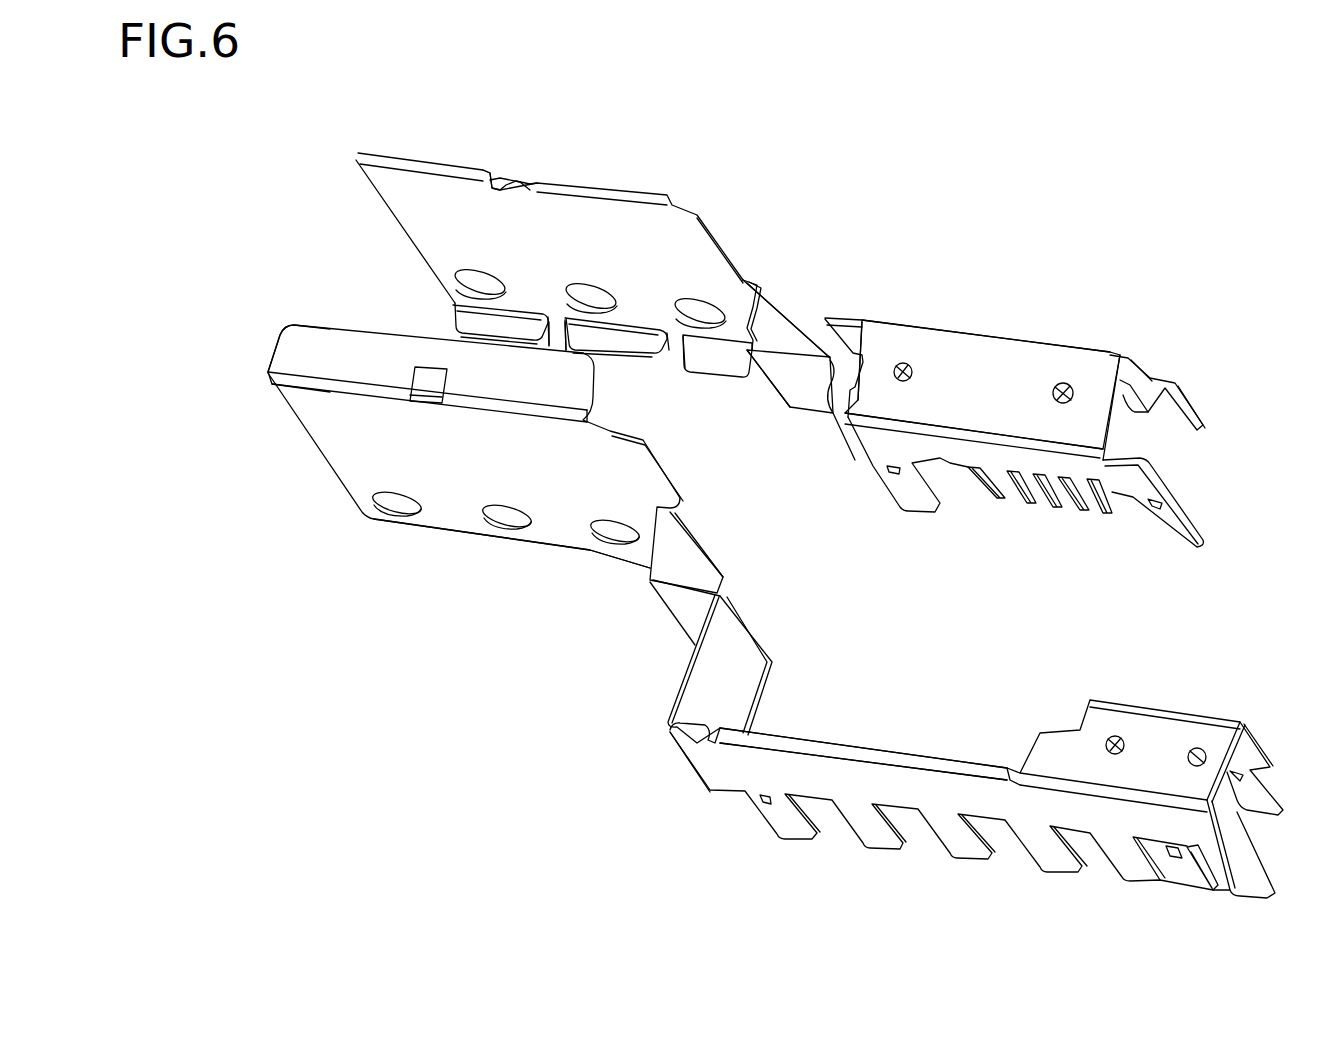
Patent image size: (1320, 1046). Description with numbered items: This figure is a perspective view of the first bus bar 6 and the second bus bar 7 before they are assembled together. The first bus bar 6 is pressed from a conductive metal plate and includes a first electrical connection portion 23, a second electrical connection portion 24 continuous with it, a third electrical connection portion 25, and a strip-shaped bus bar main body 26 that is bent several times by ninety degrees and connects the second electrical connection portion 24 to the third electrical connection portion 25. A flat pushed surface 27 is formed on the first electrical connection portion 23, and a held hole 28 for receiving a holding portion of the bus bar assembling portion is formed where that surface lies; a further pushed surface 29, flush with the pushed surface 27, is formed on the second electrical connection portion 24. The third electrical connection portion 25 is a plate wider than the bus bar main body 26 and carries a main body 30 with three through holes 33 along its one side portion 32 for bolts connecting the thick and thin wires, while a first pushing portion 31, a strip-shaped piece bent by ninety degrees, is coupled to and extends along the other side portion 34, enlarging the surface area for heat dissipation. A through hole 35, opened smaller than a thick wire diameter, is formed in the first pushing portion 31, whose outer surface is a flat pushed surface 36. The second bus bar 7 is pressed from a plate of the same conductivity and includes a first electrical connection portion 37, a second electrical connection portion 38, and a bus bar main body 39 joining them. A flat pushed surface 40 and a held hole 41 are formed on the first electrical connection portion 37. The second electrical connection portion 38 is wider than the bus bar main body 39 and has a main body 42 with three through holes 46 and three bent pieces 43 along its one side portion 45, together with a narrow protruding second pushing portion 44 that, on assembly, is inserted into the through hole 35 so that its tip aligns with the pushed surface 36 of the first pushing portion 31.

The first bus bar 6 is at (862, 692).
The second bus bar 7 is at (975, 283).
The first electrical connection portion 23 is at (1107, 722).
The second electrical connection portion 24 is at (950, 763).
The third electrical connection portion 25 is at (296, 352).
The bus bar main body 26 is at (730, 652).
The pushed surface 27 is at (1163, 728).
The held hole 28 is at (1200, 750).
The pushed surface 29 is at (890, 753).
The main body 30 is at (338, 445).
The first pushing portion 31 is at (347, 351).
The one side portion 32 is at (450, 537).
The through hole 33 is at (402, 505).
The other side portion 34 is at (310, 378).
The through hole 35 is at (430, 377).
The pushed surface 36 is at (568, 387).
The first electrical connection portion 37 is at (977, 353).
The second electrical connection portion 38 is at (417, 167).
The bus bar main body 39 is at (797, 383).
The pushed surface 40 is at (1023, 360).
The held hole 41 is at (1067, 383).
The main body 42 is at (410, 207).
The bent piece 43 is at (518, 326).
The second pushing portion 44 is at (510, 172).
The one side portion 45 is at (547, 327).
The through hole 46 is at (478, 281).